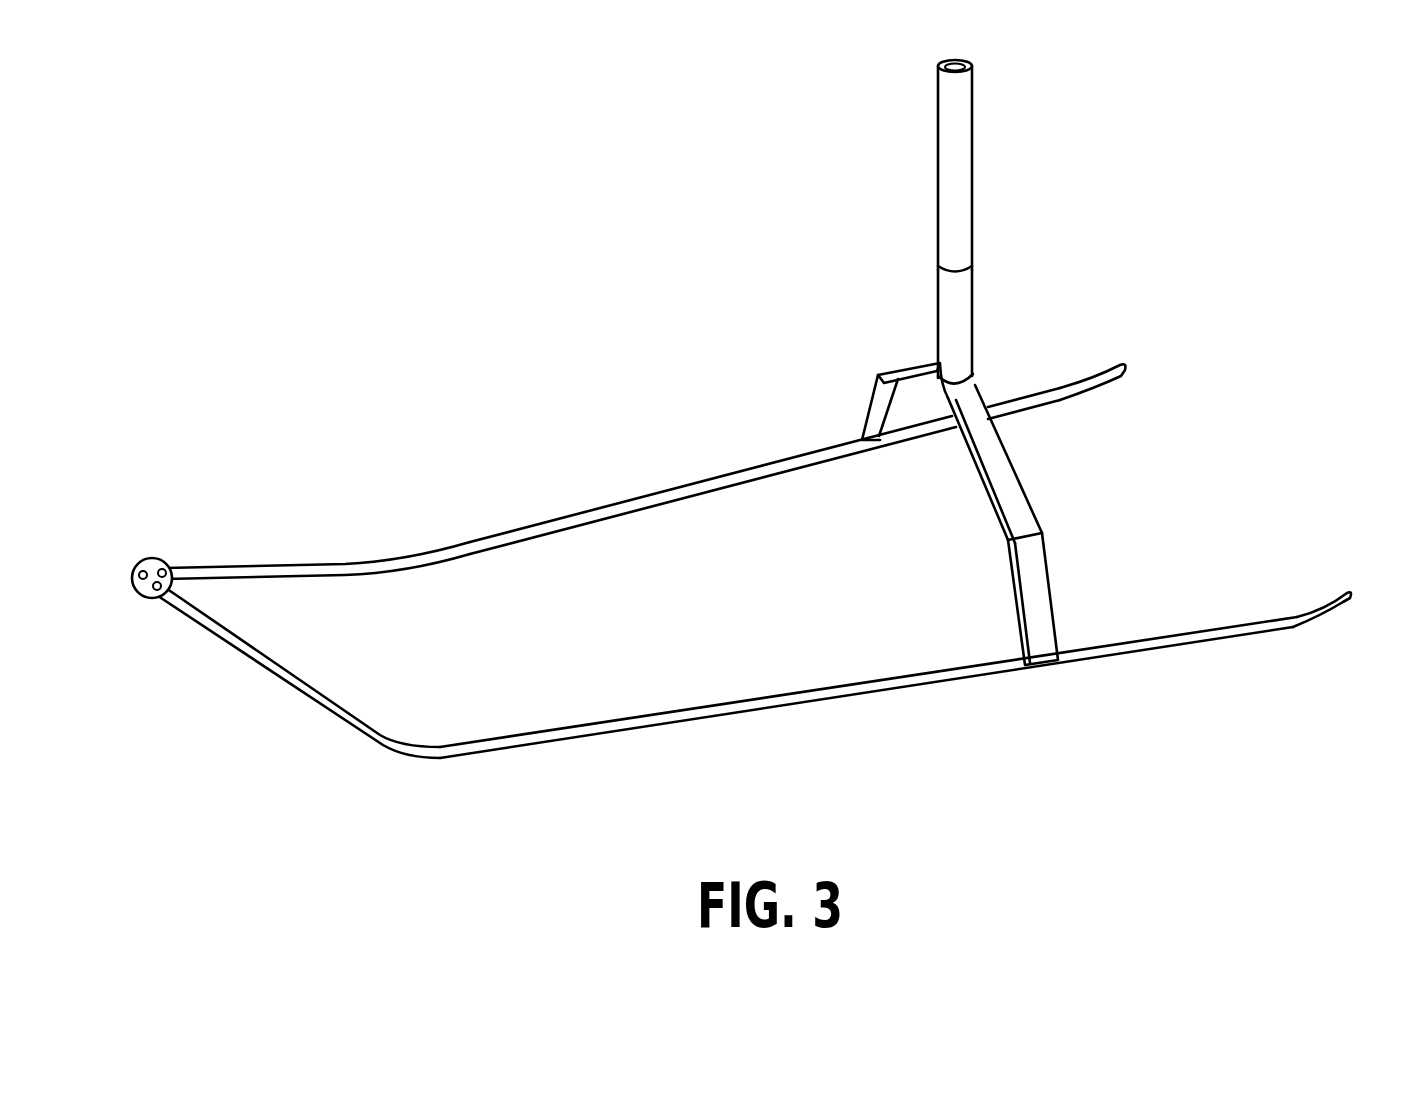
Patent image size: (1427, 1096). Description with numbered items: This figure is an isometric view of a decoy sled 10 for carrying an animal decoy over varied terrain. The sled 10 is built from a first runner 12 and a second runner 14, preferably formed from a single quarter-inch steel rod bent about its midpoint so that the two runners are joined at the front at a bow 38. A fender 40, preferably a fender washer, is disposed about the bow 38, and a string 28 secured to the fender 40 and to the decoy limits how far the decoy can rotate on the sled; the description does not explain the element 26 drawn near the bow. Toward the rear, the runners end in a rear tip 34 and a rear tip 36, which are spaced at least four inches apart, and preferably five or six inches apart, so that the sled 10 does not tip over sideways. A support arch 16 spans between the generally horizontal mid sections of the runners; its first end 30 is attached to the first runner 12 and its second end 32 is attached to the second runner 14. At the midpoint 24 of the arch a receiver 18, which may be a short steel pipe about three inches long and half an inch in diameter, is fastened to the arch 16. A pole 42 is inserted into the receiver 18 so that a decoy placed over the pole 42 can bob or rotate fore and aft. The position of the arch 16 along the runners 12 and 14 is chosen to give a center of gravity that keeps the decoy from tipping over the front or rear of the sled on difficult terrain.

The decoy sled 10 is at (1086, 147).
The first runner 12 is at (1223, 637).
The second runner 14 is at (1063, 387).
The support arch 16 is at (1043, 588).
The receiver 18 is at (975, 318).
The midpoint 24 is at (980, 387).
The lower arm 26 is at (156, 590).
The string 28 is at (176, 567).
The first end 30 is at (1047, 665).
The second end 32 is at (880, 437).
The rear tip 34 is at (1350, 595).
The rear tip 36 is at (1126, 366).
The bow 38 is at (112, 574).
The fender 40 is at (148, 560).
The pole 42 is at (968, 155).